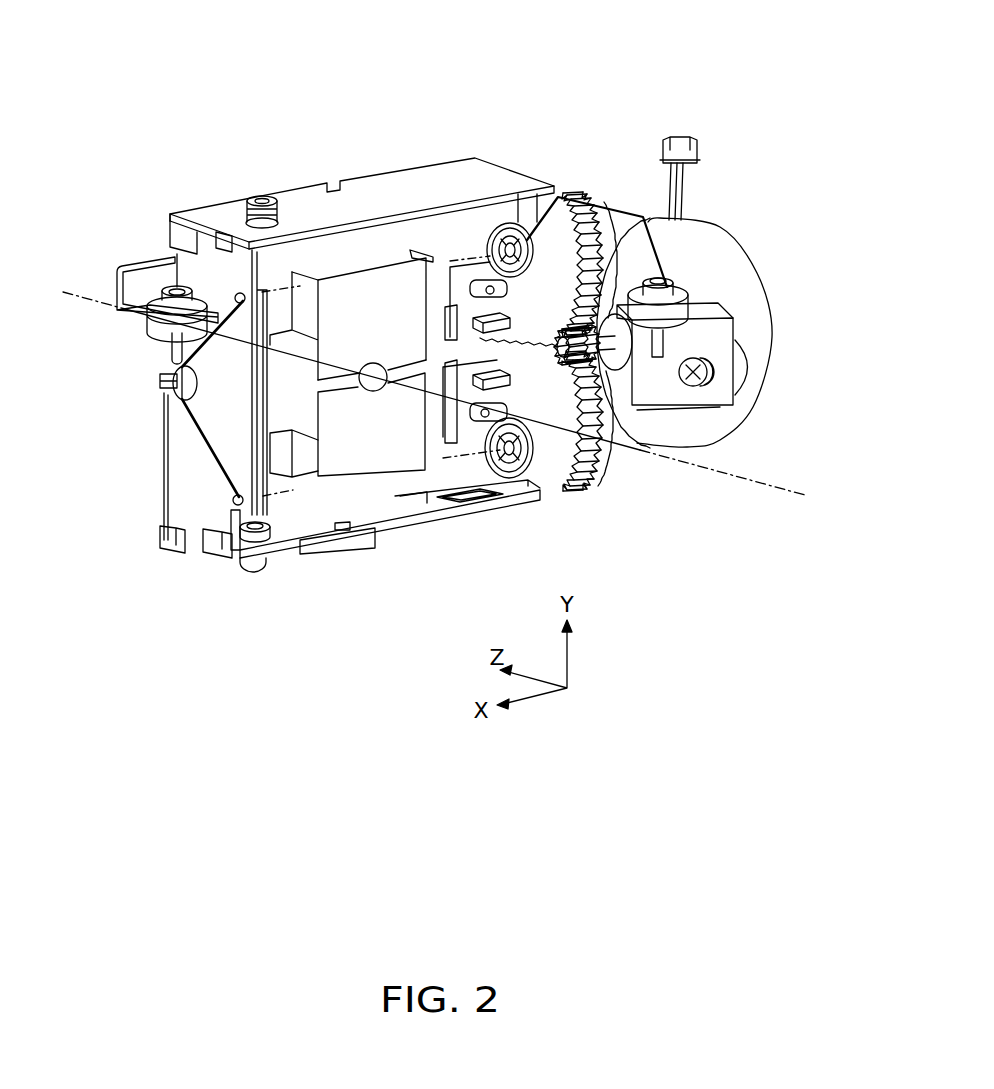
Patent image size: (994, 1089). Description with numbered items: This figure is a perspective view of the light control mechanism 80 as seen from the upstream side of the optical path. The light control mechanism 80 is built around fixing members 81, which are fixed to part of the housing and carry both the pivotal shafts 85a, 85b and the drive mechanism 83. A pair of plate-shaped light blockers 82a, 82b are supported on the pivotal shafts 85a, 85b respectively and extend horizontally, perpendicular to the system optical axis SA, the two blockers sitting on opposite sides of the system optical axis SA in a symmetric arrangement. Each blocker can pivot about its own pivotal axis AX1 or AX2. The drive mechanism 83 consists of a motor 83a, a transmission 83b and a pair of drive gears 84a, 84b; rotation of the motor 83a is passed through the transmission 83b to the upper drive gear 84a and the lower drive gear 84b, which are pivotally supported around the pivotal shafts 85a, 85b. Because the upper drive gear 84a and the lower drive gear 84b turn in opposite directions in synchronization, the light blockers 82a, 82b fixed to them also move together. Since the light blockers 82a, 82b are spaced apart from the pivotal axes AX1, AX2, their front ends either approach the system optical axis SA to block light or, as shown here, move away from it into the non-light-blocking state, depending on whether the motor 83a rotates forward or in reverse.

The light control mechanism 80 is at (586, 82).
The fixing members 81 is at (188, 253).
The light blocker 82a is at (400, 273).
The light blocker 82b is at (412, 467).
The drive mechanism 83 is at (738, 223).
The motor 83a is at (742, 282).
The transmission 83b is at (587, 368).
The upper drive gear 84a is at (565, 216).
The lower drive gear 84b is at (565, 482).
The pivotal shaft 85a is at (514, 246).
The pivotal shaft 85b is at (233, 500).
The pivotal axis AX1 is at (481, 230).
The pivotal axis AX2 is at (282, 550).
The system optical axis SA is at (710, 474).